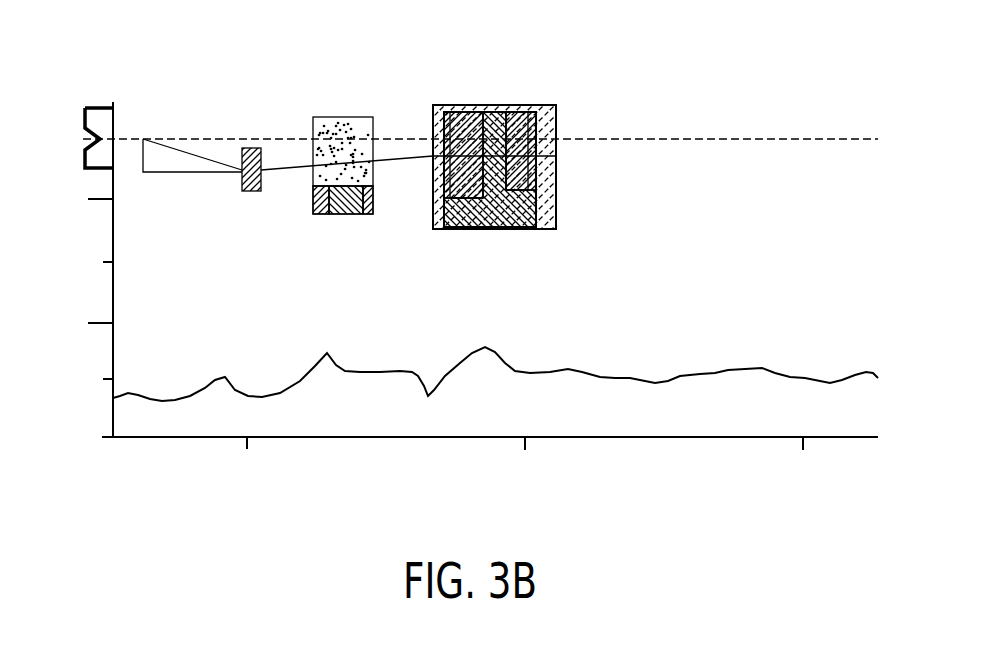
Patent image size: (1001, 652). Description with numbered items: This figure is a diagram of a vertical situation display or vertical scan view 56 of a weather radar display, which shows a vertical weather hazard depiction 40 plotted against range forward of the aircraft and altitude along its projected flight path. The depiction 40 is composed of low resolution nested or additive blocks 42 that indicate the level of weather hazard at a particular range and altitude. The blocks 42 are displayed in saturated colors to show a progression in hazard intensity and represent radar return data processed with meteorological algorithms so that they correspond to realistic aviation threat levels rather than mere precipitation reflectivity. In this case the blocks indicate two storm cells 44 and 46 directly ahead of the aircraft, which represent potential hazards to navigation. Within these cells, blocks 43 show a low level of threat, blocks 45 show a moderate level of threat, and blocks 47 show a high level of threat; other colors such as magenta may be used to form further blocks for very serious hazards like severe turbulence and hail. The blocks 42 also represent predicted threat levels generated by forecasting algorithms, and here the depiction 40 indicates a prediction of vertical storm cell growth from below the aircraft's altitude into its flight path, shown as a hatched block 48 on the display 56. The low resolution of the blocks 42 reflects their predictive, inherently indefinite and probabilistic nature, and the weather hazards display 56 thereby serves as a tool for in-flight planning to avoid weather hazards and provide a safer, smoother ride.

The vertical weather hazard depiction 40 is at (437, 315).
The nested or additive blocks 42 is at (434, 89).
The low threat blocks 43 is at (368, 215).
The storm cell 44 is at (312, 197).
The moderate threat blocks 45 is at (372, 203).
The storm cell 46 is at (557, 165).
The high threat blocks 47 is at (519, 112).
The hatched block 48 is at (317, 117).
The vertical situation display 56 is at (322, 511).